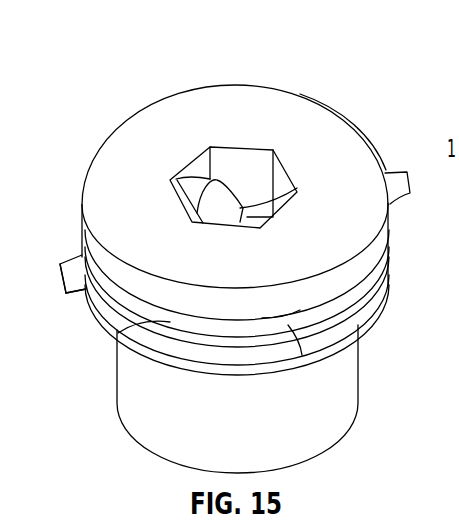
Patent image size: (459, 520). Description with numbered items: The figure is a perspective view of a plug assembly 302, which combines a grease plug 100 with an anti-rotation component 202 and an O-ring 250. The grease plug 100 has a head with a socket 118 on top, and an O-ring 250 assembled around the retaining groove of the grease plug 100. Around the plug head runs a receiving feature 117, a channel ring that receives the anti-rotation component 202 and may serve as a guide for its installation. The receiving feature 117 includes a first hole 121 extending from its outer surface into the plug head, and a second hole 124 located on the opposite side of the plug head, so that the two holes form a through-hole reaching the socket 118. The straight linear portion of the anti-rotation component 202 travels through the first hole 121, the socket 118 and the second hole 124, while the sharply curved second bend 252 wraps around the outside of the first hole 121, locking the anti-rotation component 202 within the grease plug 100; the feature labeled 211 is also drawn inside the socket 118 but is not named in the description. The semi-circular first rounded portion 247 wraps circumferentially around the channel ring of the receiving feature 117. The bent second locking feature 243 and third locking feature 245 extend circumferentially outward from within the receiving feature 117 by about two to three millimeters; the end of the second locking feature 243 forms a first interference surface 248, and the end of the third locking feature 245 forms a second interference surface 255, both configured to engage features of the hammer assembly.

The plug assembly 302 is at (349, 73).
The grease plug 100 is at (107, 132).
The socket 118 is at (240, 147).
The second hole 124 is at (177, 177).
The socket bottom surface 211 is at (283, 180).
The second interference surface 255 is at (386, 172).
The third locking feature 245 is at (400, 171).
The anti-rotation component 202 is at (80, 256).
The second locking feature 243 is at (78, 295).
The first interference surface 248 is at (81, 294).
The first rounded portion 247 is at (377, 265).
The receiving feature 117 is at (118, 333).
The first hole 121 is at (307, 358).
The O-ring 250 is at (210, 370).
The second bend 252 is at (312, 318).